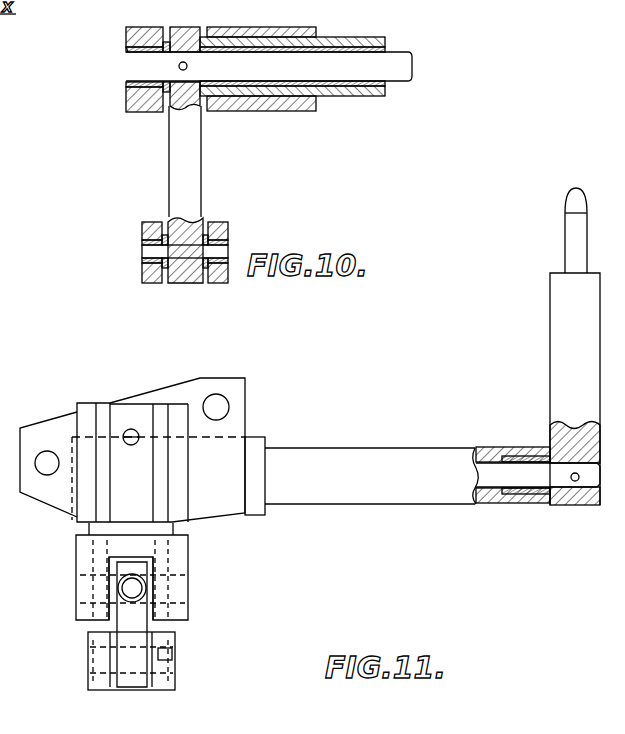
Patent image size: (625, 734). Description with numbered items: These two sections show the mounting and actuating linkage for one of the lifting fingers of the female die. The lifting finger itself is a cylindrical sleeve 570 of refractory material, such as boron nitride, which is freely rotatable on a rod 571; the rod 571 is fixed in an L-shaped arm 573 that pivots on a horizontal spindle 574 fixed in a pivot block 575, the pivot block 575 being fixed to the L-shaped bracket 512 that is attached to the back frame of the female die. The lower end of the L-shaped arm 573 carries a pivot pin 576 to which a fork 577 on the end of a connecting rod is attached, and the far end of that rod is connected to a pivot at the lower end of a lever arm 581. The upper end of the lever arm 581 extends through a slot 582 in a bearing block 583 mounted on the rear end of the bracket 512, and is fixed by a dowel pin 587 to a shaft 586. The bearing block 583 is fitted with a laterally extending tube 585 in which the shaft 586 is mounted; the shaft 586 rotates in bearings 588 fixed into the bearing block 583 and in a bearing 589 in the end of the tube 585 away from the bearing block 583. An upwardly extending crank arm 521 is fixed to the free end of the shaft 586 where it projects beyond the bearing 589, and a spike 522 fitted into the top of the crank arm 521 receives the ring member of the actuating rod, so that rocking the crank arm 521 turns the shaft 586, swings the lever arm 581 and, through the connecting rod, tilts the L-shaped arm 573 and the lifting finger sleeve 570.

In FIG. 11, the L-shaped bracket 512 is at (228, 374).
In FIG. 11, the crank arm 521 is at (555, 347).
In FIG. 11, the spike 522 is at (572, 252).
In FIG. 11, the cylindrical sleeve 570 is at (113, 582).
In FIG. 11, the rod 571 is at (132, 590).
In FIG. 11, the L-shaped arm 573 is at (137, 622).
In FIG. 11, the horizontal spindle 574 is at (188, 582).
In FIG. 11, the pivot block 575 is at (178, 552).
In FIG. 11, the pivot pin 576 is at (160, 653).
In FIG. 11, the fork 577 is at (165, 682).
In FIG. 10, the lever arm 581 is at (188, 170).
In FIG. 10, the slot 582 is at (167, 42).
In FIG. 10, the bearing block 583 is at (230, 32).
In FIG. 11, the bearing block 583 is at (258, 447).
In FIG. 11, the tube 585 is at (380, 460).
In FIG. 10, the shaft 586 is at (355, 70).
In FIG. 11, the shaft 586 is at (588, 477).
In FIG. 10, the dowel pin 587 is at (179, 67).
In FIG. 10, the bearings 588 is at (128, 51).
In FIG. 11, the bearing 589 is at (515, 460).